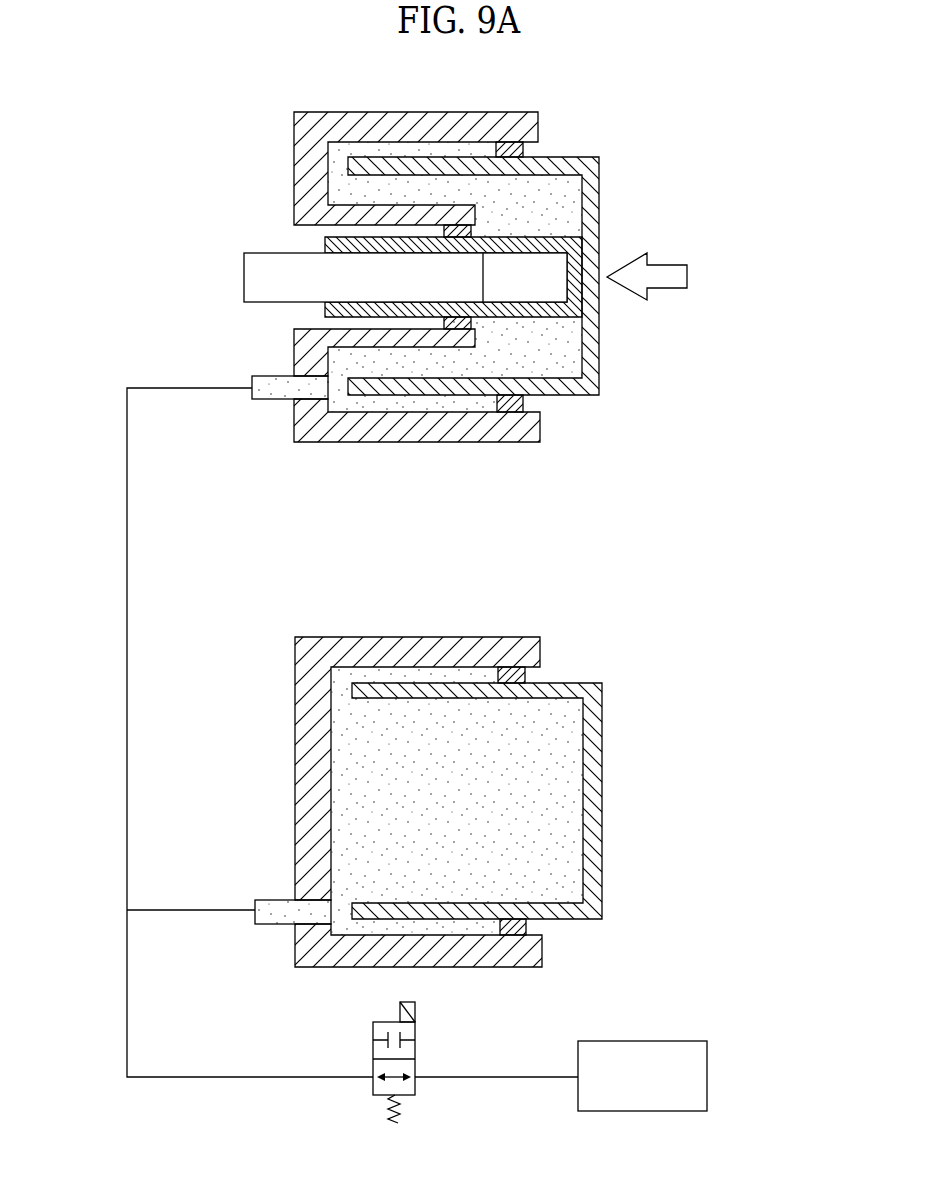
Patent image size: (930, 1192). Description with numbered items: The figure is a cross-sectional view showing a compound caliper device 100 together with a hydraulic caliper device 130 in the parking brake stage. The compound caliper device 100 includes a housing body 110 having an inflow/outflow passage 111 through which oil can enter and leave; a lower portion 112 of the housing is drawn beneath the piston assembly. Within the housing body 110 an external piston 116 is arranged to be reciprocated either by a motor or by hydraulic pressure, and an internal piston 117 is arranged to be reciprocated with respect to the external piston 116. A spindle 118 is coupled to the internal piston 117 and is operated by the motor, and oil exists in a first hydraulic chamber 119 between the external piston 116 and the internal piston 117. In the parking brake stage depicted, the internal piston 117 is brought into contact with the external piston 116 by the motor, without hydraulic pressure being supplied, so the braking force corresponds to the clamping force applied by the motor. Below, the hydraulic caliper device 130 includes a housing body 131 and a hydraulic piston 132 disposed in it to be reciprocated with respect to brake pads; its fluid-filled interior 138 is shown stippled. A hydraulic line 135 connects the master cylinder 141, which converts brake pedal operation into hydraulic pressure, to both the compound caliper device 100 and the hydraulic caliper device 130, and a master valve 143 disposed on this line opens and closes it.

The compound caliper device 100 is at (268, 127).
The housing body 110 is at (437, 112).
The inflow/outflow passage 111 is at (265, 400).
The housing lower body 112 is at (345, 430).
The external piston 116 is at (565, 157).
The internal piston 117 is at (560, 302).
The spindle 118 is at (428, 282).
The first hydraulic chamber 119 is at (560, 203).
The hydraulic caliper device 130 is at (508, 598).
The housing body 131 is at (425, 655).
The hydraulic piston 132 is at (575, 683).
The hydraulic line 135 is at (106, 686).
The reservoir fluid chamber 138 is at (560, 787).
The master cylinder 141 is at (684, 1041).
The master valve 143 is at (373, 1038).